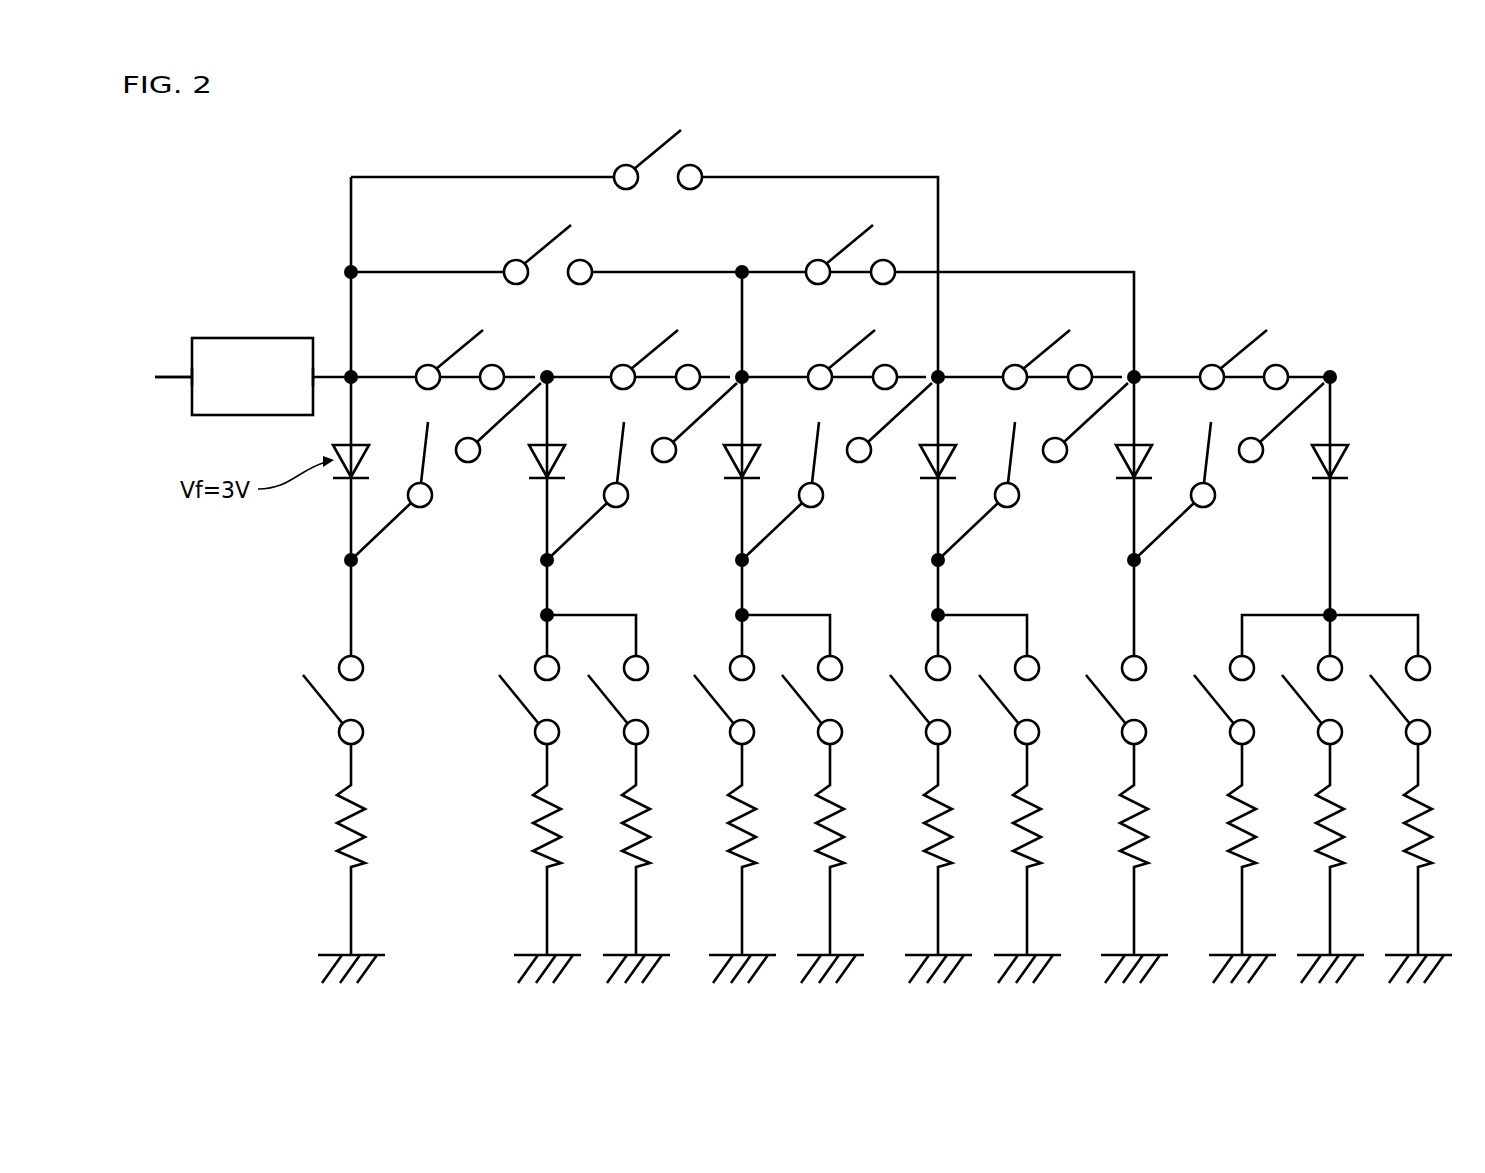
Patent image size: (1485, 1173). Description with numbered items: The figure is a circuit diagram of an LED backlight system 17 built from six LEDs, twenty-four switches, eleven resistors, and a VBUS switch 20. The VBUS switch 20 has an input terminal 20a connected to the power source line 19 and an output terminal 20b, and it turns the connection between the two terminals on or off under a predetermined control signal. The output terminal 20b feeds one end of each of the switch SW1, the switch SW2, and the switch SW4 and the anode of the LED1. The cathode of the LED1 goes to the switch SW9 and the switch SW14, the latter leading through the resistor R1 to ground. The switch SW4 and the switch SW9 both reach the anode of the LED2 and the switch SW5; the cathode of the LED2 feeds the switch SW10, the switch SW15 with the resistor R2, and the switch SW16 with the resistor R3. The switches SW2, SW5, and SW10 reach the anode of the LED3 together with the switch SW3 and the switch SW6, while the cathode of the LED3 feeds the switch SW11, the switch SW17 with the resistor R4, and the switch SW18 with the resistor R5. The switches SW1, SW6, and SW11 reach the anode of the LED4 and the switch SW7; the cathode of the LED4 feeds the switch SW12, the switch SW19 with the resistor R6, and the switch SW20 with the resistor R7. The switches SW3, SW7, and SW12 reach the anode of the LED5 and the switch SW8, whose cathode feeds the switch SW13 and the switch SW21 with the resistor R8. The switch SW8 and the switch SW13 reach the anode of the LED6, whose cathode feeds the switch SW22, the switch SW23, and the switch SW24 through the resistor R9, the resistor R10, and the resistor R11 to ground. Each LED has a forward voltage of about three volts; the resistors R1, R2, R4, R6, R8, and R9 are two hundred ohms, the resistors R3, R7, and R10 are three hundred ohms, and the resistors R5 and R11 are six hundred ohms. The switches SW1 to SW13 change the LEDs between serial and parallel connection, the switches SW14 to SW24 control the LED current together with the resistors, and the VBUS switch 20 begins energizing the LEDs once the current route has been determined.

The LED backlight system 17 is at (1376, 276).
The power source line 19 is at (180, 376).
The VBUS switch 20 is at (199, 337).
The input terminal 20a is at (190, 380).
The output terminal 20b is at (316, 371).
The switch SW1 is at (656, 149).
The switch SW2 is at (546, 244).
The switch SW3 is at (848, 244).
The switch SW4 is at (458, 349).
The switch SW5 is at (653, 349).
The switch SW6 is at (850, 349).
The switch SW7 is at (1045, 349).
The switch SW8 is at (1242, 349).
The switch SW9 is at (427, 452).
The switch SW10 is at (623, 452).
The switch SW11 is at (818, 452).
The switch SW12 is at (1014, 452).
The switch SW13 is at (1210, 452).
The switch SW14 is at (322, 702).
The switch SW15 is at (518, 702).
The switch SW16 is at (607, 702).
The switch SW17 is at (713, 702).
The switch SW18 is at (801, 702).
The switch SW19 is at (909, 702).
The switch SW20 is at (998, 702).
The switch SW21 is at (1105, 702).
The switch SW22 is at (1213, 702).
The switch SW23 is at (1301, 702).
The switch SW24 is at (1389, 702).
The LED LED1 is at (366, 444).
The LED LED2 is at (562, 444).
The LED LED3 is at (757, 444).
The LED LED4 is at (953, 444).
The LED LED5 is at (1149, 444).
The LED LED6 is at (1345, 444).
The resistor R1 is at (347, 826).
The resistor R2 is at (543, 826).
The resistor R3 is at (632, 826).
The resistor R4 is at (738, 826).
The resistor R5 is at (826, 826).
The resistor R6 is at (934, 826).
The resistor R7 is at (1023, 826).
The resistor R8 is at (1130, 826).
The resistor R9 is at (1238, 826).
The resistor R10 is at (1326, 826).
The resistor R11 is at (1414, 826).